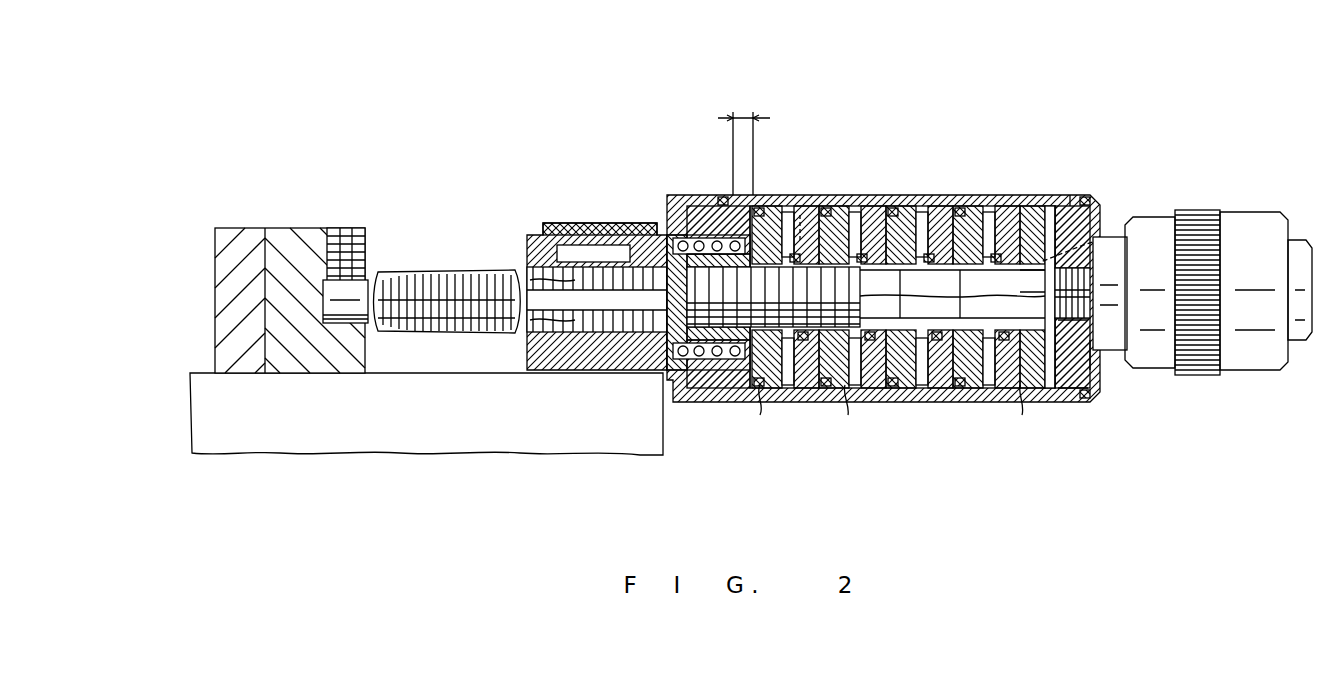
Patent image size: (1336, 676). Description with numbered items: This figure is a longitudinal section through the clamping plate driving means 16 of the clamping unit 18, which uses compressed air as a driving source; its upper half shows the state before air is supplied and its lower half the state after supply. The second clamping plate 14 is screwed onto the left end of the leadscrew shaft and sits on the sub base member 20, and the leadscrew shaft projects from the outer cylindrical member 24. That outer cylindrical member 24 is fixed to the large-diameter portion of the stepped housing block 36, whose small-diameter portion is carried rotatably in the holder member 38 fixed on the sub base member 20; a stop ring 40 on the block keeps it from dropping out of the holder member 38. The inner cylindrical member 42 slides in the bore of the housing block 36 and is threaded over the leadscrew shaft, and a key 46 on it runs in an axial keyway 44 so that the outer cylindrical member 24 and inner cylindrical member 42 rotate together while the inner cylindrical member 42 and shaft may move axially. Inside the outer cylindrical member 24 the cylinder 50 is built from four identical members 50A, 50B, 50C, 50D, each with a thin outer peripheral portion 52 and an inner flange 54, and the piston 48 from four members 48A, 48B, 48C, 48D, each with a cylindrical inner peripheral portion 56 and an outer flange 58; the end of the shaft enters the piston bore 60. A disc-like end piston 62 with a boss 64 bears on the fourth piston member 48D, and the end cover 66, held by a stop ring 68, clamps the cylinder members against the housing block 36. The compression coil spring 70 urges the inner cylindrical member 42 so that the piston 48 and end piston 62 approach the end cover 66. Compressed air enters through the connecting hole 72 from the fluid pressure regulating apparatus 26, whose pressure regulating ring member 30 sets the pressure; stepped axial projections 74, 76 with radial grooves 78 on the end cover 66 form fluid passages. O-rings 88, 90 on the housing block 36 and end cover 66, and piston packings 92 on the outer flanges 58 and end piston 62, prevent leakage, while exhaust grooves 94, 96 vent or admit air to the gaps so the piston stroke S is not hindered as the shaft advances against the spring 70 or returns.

The second clamping plate 14 is at (250, 228).
The clamping plate driving means 16 is at (862, 195).
The clamping unit 18 is at (388, 135).
The sub base member 20 is at (205, 373).
The outer cylindrical member 24 is at (700, 255).
The fluid pressure regulating apparatus 26 is at (1255, 212).
The pressure regulating ring member 30 is at (1200, 210).
The housing block 36 is at (667, 212).
The holder member 38 is at (560, 225).
The stop ring 40 is at (540, 240).
The inner cylindrical member 42 is at (535, 258).
The keyway 44 is at (690, 245).
The key 46 is at (560, 245).
The piston 48 is at (858, 276).
The first piston member 48A is at (748, 210).
The second piston member 48B is at (822, 210).
The third piston member 48C is at (895, 210).
The fourth piston member 48D is at (985, 215).
The cylinder 50 is at (881, 291).
The first cylinder member 50A is at (775, 240).
The second cylinder member 50B is at (885, 240).
The third cylinder member 50C is at (965, 250).
The fourth cylinder member 50D is at (1020, 210).
The thin outer peripheral portion 52 is at (970, 215).
The inner flange 54 is at (925, 262).
The cylindrical inner peripheral portion 56 is at (865, 272).
The outer flange 58 is at (835, 235).
The bore of piston 60 is at (880, 265).
The end piston 62 is at (1048, 220).
The boss 64 is at (1020, 225).
The end cover 66 is at (1100, 215).
The stop ring 68 is at (1090, 210).
The compression coil spring 70 is at (690, 235).
The connecting hole 72 is at (1110, 293).
The axial projection 74 is at (1060, 330).
The axial projection 76 is at (1070, 380).
The radially extended grooves 78 is at (1100, 360).
The O-ring 88 is at (720, 200).
The O-ring 90 is at (1085, 200).
The piston packings 92 is at (760, 205).
The exhaust groove 94 is at (800, 240).
The exhaust groove 96 is at (1100, 240).
The stroke spacing S is at (744, 142).